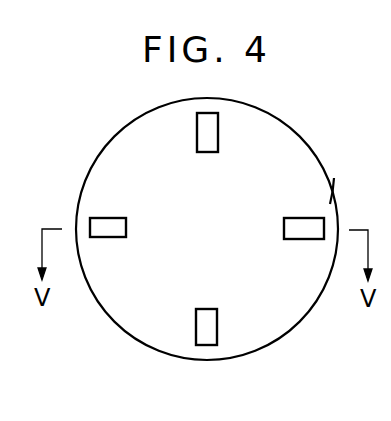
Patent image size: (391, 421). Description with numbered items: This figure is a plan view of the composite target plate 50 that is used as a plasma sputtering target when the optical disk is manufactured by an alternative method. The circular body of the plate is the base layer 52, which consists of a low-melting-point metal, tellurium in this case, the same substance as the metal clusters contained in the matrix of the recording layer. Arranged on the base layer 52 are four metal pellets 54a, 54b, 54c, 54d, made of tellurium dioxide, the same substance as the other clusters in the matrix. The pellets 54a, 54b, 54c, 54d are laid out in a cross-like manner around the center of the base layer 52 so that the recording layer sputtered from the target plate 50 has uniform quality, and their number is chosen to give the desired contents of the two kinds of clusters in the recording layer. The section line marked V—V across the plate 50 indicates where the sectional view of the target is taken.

The composite target plate 50 is at (319, 153).
The base layer 52 is at (324, 192).
The metal pellet 54a is at (110, 228).
The metal pellet 54b is at (204, 319).
The metal pellet 54c is at (298, 232).
The metal pellet 54d is at (211, 137).